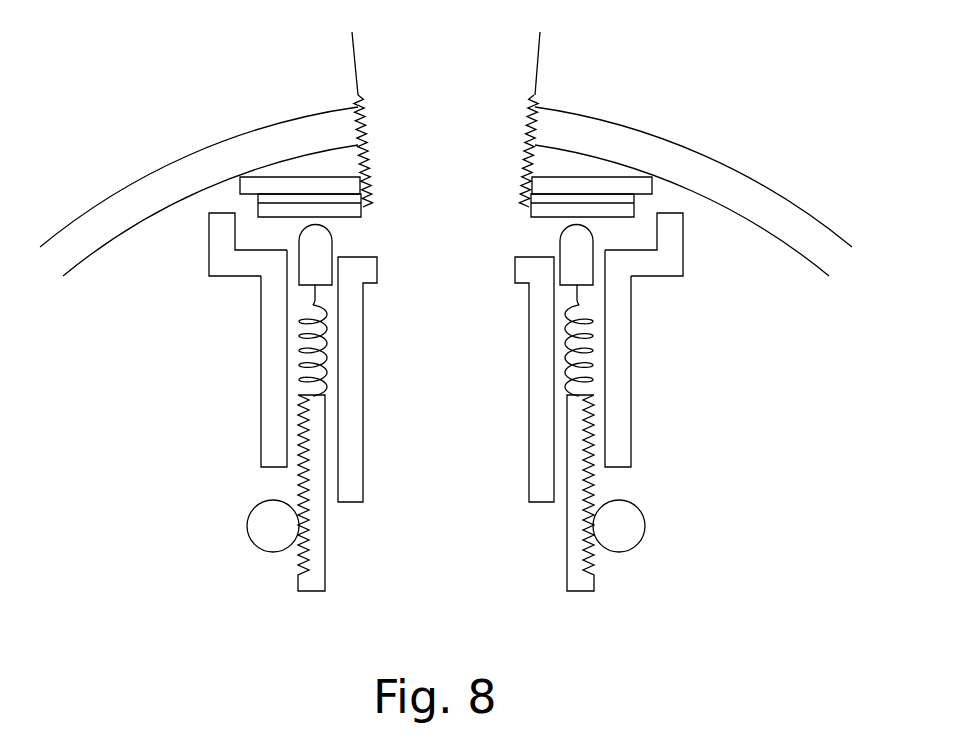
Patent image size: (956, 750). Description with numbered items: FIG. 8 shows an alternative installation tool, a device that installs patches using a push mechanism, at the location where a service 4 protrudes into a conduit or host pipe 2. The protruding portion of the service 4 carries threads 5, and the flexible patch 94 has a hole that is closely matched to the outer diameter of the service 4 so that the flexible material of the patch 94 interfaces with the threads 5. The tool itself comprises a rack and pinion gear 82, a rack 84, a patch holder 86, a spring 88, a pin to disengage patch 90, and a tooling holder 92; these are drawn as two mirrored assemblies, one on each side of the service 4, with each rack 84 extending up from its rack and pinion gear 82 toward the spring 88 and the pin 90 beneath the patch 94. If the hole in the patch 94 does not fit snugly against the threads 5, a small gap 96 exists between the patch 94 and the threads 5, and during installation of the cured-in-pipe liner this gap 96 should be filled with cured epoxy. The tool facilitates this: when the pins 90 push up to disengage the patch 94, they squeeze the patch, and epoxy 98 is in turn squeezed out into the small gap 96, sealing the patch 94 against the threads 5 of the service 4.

The conduit or host pipe 2 is at (720, 153).
The service 4 is at (537, 73).
The threads 5 is at (527, 155).
The rack and pinion gear 82 is at (252, 508).
The rack 84 is at (285, 588).
The patch holder 86 is at (210, 245).
The spring 88 is at (300, 333).
The pin to disengage patch 90 is at (328, 228).
The tooling holder 92 is at (260, 417).
The patch 94 is at (615, 212).
The small gap 96 is at (358, 175).
The epoxy 98 is at (275, 192).